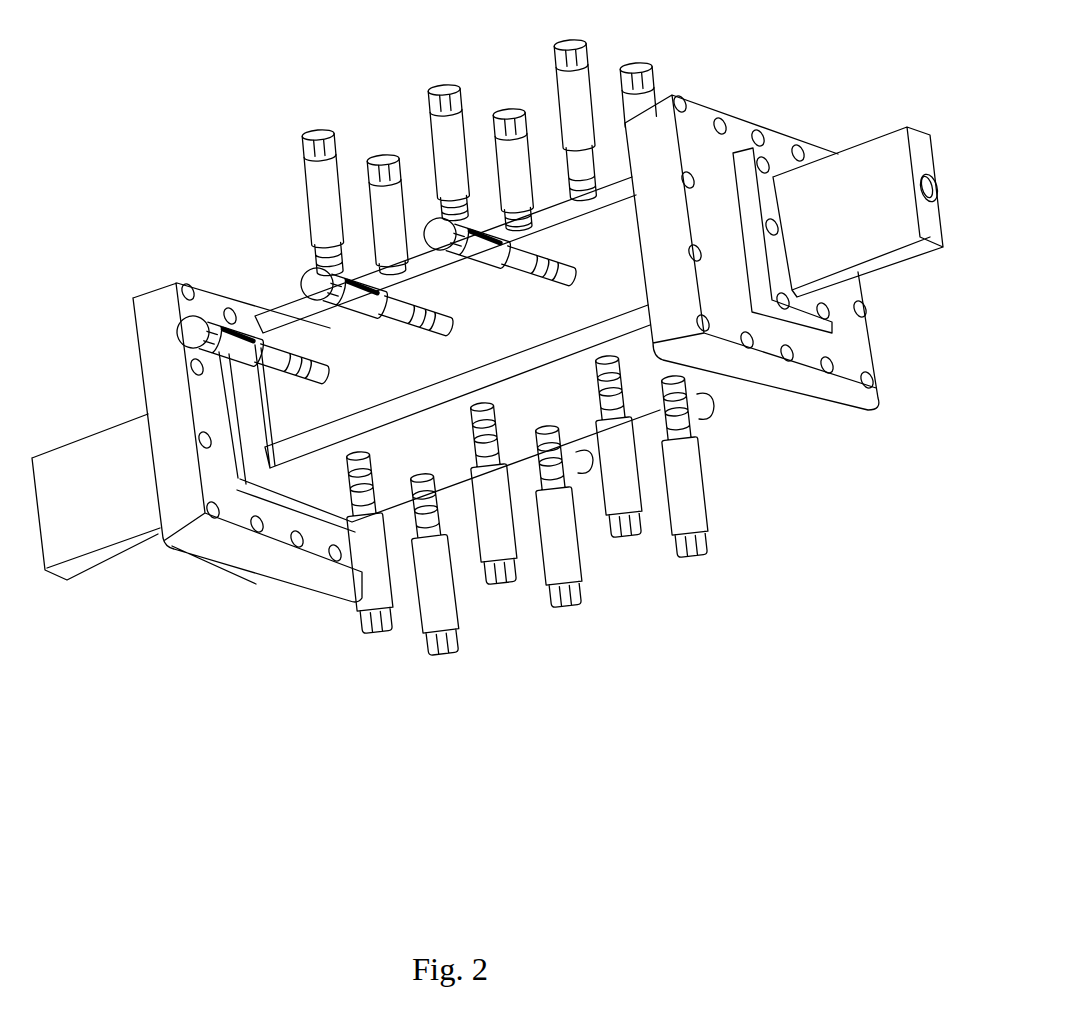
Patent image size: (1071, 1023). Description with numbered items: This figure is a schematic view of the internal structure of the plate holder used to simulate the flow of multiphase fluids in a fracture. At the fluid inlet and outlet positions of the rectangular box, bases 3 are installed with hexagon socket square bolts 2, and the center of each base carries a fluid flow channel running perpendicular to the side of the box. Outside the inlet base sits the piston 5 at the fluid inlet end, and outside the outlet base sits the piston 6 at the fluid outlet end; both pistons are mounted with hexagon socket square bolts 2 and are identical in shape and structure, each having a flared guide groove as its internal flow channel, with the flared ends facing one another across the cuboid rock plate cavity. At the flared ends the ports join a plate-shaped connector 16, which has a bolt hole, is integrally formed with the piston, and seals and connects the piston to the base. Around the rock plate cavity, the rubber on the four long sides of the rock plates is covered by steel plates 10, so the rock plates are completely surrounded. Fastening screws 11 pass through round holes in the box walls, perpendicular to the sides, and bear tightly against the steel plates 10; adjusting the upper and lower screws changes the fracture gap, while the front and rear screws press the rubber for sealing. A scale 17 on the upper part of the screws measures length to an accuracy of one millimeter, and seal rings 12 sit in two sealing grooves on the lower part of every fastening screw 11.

The hexagon socket square bolt 2 is at (831, 313).
The base 3 is at (801, 397).
The piston at the fluid inlet end 5 is at (93, 532).
The piston at the fluid outlet end 6 is at (880, 263).
The steel plate 10 is at (302, 413).
The fastening screw 11 is at (700, 560).
The seal ring 12 is at (561, 272).
The plate-shaped connector 16 is at (828, 334).
The scale 17 is at (485, 232).